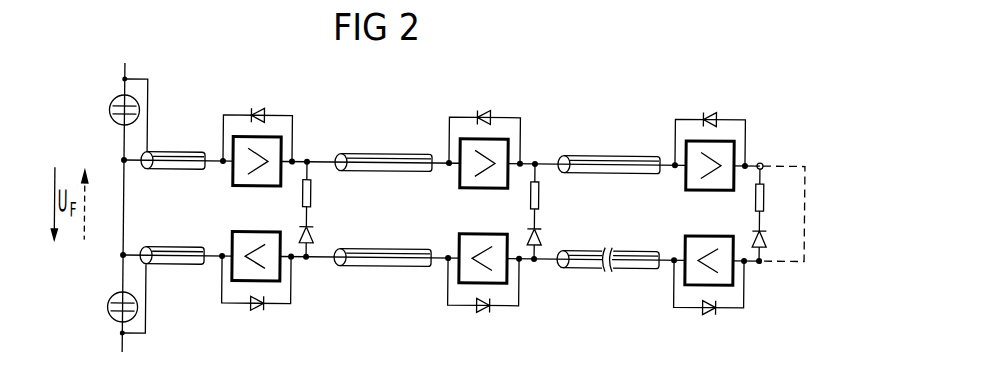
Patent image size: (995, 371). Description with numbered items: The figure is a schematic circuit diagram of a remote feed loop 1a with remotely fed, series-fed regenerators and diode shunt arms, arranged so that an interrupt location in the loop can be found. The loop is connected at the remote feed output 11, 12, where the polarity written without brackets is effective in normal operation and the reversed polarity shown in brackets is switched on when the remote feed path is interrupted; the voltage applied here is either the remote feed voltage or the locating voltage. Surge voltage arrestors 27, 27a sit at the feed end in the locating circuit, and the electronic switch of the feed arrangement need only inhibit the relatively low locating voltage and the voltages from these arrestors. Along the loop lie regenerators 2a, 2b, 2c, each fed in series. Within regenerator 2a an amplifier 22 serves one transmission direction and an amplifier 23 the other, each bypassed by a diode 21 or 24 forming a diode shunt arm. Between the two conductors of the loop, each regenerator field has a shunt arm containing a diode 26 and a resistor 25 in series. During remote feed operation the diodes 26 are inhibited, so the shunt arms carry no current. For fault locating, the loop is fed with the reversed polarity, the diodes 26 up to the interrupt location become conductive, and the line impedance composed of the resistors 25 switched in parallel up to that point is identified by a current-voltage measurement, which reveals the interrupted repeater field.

The remote feed output terminal 11 is at (95, 155).
The remote feed output terminal 12 is at (96, 247).
The remote feed loop 1a is at (160, 207).
The regenerator 2a is at (270, 208).
The regenerator 2b is at (500, 225).
The regenerator 2c is at (727, 222).
The diode 21 is at (258, 116).
The amplifier 22 is at (226, 178).
The amplifier 23 is at (229, 226).
The diode 24 is at (256, 301).
The resistor 25 is at (318, 194).
The diode 26 is at (317, 237).
The surge voltage arrestor 27 is at (115, 114).
The surge voltage arrestor 27a is at (108, 299).